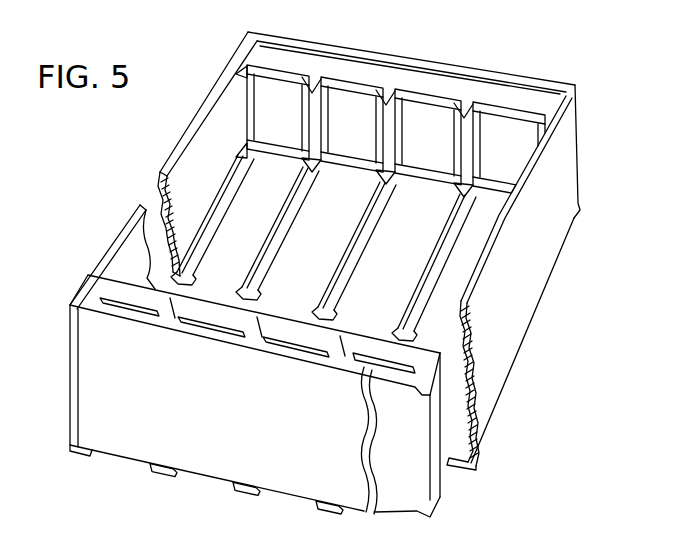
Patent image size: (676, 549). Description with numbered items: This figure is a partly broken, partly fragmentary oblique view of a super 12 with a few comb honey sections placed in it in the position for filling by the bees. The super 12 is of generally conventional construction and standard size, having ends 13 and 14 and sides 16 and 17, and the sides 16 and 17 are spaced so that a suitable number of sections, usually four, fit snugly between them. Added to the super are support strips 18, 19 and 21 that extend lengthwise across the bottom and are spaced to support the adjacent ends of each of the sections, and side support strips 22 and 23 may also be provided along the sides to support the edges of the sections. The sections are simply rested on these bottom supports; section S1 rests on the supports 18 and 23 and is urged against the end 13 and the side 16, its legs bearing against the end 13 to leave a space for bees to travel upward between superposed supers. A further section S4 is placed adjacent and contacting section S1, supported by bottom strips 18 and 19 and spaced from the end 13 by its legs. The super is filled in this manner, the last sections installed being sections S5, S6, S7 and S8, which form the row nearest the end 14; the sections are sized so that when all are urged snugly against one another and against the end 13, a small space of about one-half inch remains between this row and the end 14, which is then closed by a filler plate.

The super 12 is at (237, 46).
The end 13 is at (133, 434).
The end 14 is at (476, 72).
The side 16 is at (549, 232).
The side 17 is at (178, 173).
The support strip 18 is at (412, 303).
The support strip 19 is at (342, 273).
The support strip 21 is at (267, 253).
The side support strip 22 is at (222, 201).
The side support strip 23 is at (471, 464).
The section S1 is at (399, 357).
The section S4 is at (305, 337).
The section S5 is at (514, 100).
The section S6 is at (429, 87).
The section S7 is at (356, 74).
The section S8 is at (280, 62).